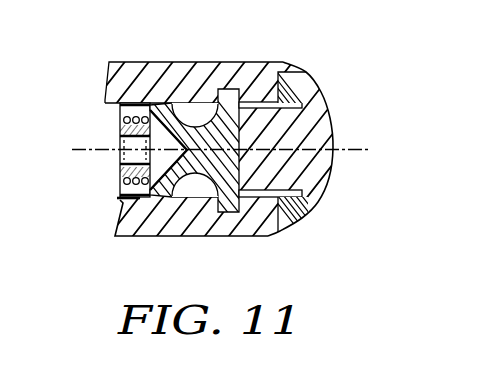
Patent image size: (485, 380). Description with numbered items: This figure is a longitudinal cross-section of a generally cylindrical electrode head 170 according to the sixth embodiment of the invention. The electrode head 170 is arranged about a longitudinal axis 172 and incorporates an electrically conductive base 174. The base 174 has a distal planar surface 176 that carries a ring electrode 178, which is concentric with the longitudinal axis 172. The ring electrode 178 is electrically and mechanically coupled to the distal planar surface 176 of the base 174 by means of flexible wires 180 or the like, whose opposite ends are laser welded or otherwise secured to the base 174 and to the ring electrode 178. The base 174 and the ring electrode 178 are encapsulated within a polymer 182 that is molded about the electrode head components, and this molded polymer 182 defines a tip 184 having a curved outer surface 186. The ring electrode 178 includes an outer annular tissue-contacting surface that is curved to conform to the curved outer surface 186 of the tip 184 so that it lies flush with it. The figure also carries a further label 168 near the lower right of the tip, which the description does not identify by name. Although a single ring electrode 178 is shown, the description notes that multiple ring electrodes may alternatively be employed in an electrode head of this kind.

The electrode head 170 is at (129, 43).
The polymer 182 is at (172, 72).
The flexible wires 180 is at (255, 98).
The ring electrode 178 is at (291, 65).
The tip 184 is at (328, 128).
The curved outer surface 186 is at (334, 170).
The ball end 168 is at (298, 226).
The electrically conductive base 174 is at (138, 236).
The distal planar surface 176 is at (237, 233).
The longitudinal axis 172 is at (82, 149).